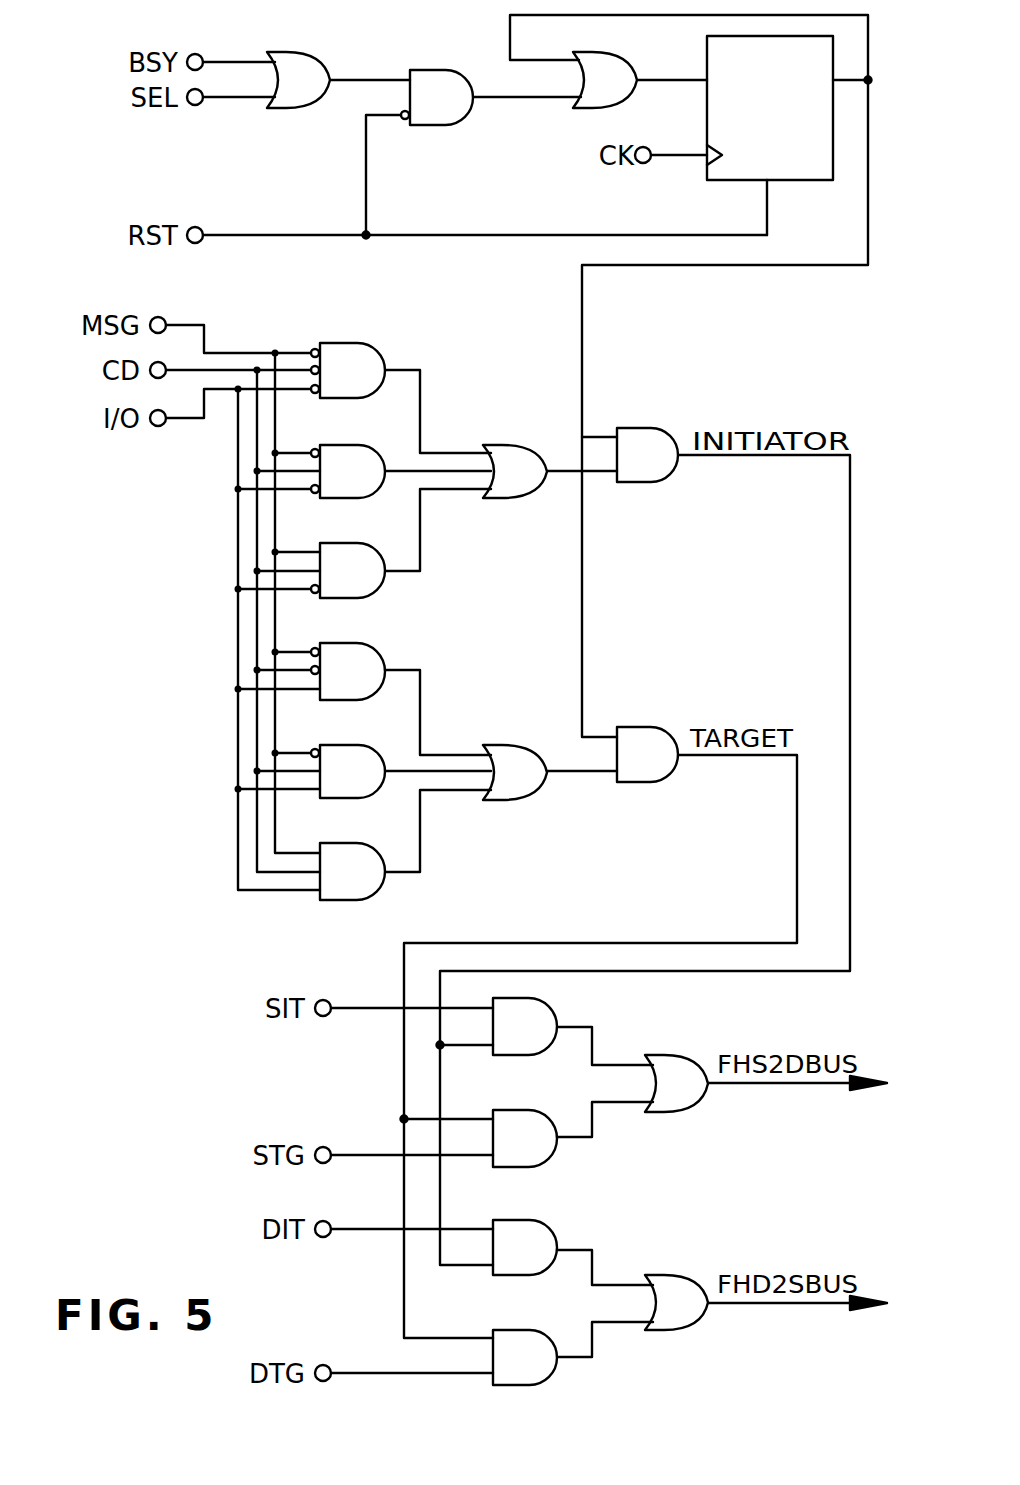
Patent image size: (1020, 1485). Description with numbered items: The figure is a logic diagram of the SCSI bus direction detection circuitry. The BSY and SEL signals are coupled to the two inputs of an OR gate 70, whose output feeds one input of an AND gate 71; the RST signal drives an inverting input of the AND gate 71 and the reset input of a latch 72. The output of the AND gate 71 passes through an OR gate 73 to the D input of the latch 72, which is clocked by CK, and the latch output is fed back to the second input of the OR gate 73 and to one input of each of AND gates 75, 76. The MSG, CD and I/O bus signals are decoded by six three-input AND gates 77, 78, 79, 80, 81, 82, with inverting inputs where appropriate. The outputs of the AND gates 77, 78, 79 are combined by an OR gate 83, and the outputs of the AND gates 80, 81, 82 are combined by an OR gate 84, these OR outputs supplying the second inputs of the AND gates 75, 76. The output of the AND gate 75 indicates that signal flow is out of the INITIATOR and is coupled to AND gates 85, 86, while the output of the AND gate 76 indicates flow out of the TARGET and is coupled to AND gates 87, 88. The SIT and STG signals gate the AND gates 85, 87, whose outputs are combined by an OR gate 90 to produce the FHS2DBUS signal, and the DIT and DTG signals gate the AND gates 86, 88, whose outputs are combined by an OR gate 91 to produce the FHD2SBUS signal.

The OR gate 70 is at (307, 52).
The AND gate 71 is at (430, 117).
The latch 72 is at (795, 172).
The OR gate 73 is at (586, 103).
The AND gate 75 is at (638, 477).
The AND gate 76 is at (635, 740).
The AND gate 77 is at (367, 357).
The AND gate 78 is at (355, 450).
The AND gate 79 is at (352, 550).
The AND gate 80 is at (372, 647).
The AND gate 81 is at (355, 742).
The AND gate 82 is at (355, 890).
The OR gate 83 is at (515, 445).
The OR gate 84 is at (510, 795).
The AND gate 85 is at (545, 1017).
The AND gate 86 is at (540, 1218).
The AND gate 87 is at (528, 1110).
The AND gate 88 is at (525, 1335).
The OR gate 90 is at (680, 1102).
The OR gate 91 is at (677, 1288).